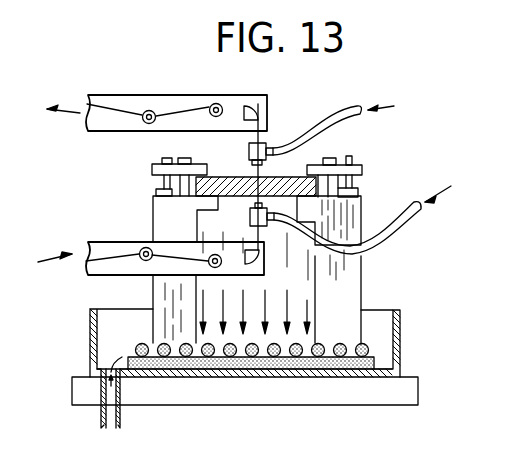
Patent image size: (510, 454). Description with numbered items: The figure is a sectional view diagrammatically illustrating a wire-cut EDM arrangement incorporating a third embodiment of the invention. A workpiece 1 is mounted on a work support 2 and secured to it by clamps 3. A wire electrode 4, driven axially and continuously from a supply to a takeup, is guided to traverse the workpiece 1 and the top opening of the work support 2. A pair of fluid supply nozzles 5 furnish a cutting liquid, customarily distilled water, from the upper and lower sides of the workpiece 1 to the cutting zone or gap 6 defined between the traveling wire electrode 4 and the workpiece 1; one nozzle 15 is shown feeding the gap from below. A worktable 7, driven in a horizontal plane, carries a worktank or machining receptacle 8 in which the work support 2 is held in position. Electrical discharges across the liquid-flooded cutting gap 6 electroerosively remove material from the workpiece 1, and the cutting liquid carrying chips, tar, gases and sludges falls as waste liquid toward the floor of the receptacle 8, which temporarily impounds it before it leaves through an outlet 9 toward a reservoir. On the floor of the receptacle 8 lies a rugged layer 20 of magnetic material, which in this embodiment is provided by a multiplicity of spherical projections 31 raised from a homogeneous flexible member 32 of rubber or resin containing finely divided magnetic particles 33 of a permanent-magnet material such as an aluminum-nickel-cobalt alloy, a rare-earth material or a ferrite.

The workpiece 1 is at (288, 176).
The work support 2 is at (157, 207).
The clamps 3 is at (152, 180).
The wire electrode 4 is at (233, 97).
The fluid supply nozzles 5 is at (268, 145).
The cutting zone or gap 6 is at (251, 177).
The worktable 7 is at (377, 397).
The worktank or machining receptacle 8 is at (402, 364).
The outlet 9 is at (102, 387).
The lower nozzle fitting 15 is at (247, 218).
The rugged layer of magnetic material 20 is at (137, 348).
The spherical projections 31 is at (342, 344).
The homogeneous flexible member 32 is at (220, 368).
The finely divided magnetic particles 33 is at (163, 357).